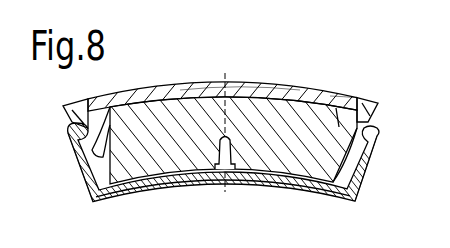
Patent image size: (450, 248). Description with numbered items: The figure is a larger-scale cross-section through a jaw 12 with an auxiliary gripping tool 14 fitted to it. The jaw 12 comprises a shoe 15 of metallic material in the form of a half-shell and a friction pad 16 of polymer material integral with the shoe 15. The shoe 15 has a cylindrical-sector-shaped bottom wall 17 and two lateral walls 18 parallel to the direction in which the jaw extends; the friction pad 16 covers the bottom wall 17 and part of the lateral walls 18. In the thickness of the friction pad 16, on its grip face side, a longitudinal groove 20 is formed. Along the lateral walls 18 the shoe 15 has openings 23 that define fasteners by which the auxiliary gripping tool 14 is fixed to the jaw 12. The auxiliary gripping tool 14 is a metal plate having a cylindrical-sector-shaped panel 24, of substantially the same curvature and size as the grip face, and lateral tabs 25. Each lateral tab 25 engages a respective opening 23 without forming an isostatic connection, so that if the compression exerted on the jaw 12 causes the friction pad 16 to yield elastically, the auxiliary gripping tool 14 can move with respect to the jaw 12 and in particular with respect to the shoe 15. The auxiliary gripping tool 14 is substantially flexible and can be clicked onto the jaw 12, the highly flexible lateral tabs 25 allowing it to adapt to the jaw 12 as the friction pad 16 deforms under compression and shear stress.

The jaw 12 is at (351, 80).
The auxiliary gripping tool 14 is at (291, 199).
The shoe 15 is at (193, 87).
The friction pad 16 is at (336, 106).
The bottom wall 17 is at (283, 90).
The lateral walls 18 is at (100, 133).
The longitudinal groove 20 is at (228, 148).
The openings 23 is at (69, 116).
The cylindrical-sector-shaped panel 24 is at (195, 178).
The lateral tabs 25 is at (77, 182).